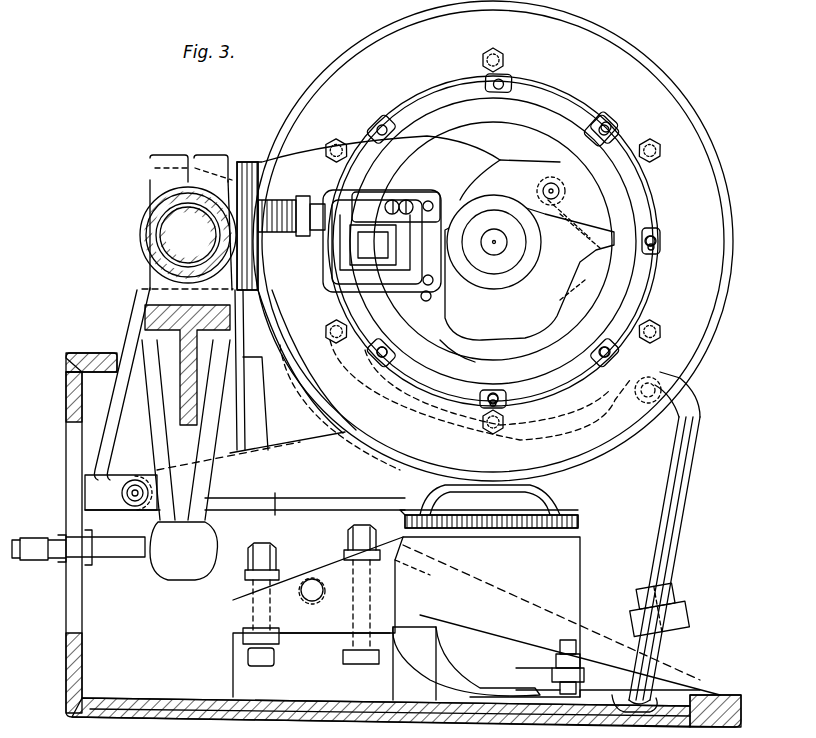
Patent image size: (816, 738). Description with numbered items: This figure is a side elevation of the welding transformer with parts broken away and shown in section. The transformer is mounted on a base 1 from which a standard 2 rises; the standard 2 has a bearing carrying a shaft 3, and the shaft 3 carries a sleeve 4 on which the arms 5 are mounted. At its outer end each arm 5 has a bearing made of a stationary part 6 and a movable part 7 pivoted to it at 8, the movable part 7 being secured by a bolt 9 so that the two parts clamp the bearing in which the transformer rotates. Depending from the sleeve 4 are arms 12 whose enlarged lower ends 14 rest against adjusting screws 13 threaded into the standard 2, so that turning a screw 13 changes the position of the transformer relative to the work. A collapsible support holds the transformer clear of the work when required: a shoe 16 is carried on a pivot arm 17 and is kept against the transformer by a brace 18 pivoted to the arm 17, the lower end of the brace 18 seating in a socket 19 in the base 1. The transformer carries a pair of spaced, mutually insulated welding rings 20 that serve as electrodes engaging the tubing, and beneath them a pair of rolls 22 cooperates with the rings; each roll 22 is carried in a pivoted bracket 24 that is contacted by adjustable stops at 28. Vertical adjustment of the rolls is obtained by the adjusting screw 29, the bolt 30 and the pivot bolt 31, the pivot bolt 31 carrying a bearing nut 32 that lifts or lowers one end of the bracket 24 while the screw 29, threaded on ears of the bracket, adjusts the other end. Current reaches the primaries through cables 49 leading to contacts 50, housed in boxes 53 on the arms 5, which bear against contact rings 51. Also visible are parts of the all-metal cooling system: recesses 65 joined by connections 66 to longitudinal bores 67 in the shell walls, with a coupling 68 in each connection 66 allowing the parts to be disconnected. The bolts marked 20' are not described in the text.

The base 1 is at (705, 700).
The standard 2 is at (118, 330).
The shaft 3 is at (175, 232).
The sleeve 4 is at (148, 206).
The arms 5 is at (250, 165).
The stationary part 6 is at (528, 168).
The movable part 7 is at (550, 295).
The pivot 8 is at (428, 310).
The bolt 9 is at (560, 210).
The arms 12 is at (160, 430).
The adjusting screws 13 is at (122, 550).
The enlarged lower ends 14 is at (178, 565).
The shoe 16 is at (620, 364).
The pivot arm 17 is at (290, 500).
The brace 18 is at (672, 522).
The socket 19 is at (614, 700).
The welding rings 20 is at (502, 241).
The bolts 20' is at (507, 234).
The rolls 22 is at (560, 510).
The bracket 24 is at (466, 618).
The contact point 28 is at (312, 580).
The adjusting screw 29 is at (570, 640).
The bolt 30 is at (380, 520).
The pivot bolt 31 is at (258, 545).
The bearing nut 32 is at (243, 636).
The cables 49 is at (275, 200).
The contacts 50 is at (412, 198).
The contact rings 51 is at (585, 120).
The boxes 53 is at (345, 192).
The recesses 65 is at (482, 82).
The connections 66 is at (657, 251).
The bores 67 is at (615, 130).
The coupling 68 is at (657, 234).